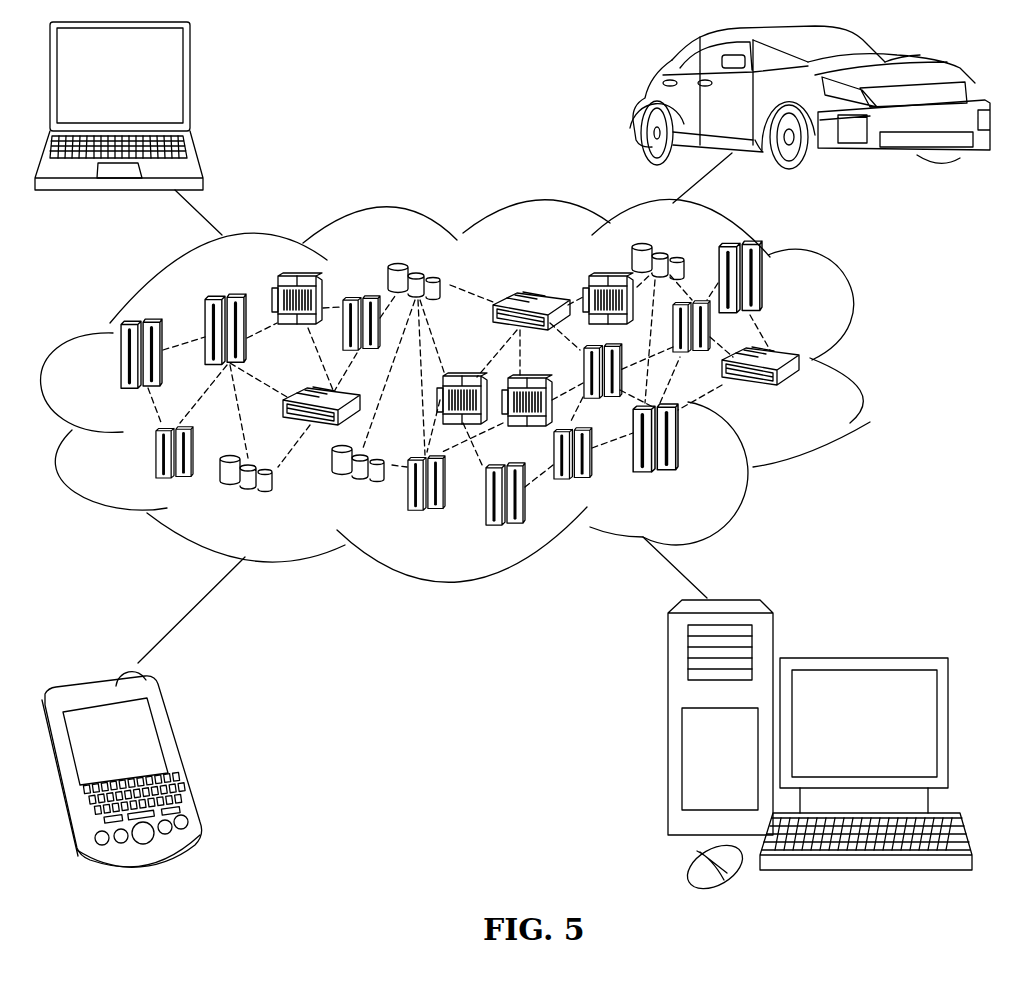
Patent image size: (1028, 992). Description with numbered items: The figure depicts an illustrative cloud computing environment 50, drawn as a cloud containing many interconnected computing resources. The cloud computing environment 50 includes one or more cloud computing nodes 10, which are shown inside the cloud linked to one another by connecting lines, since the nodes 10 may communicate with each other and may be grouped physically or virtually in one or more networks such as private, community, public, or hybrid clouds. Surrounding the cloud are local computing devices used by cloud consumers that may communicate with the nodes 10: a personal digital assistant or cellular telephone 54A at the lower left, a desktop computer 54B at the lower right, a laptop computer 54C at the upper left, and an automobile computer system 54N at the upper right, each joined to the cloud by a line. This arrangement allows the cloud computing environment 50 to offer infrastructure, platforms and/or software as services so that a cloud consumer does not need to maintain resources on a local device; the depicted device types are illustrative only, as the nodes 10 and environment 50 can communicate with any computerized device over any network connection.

The cloud computing node 10 is at (808, 397).
The cloud computing environment 50 is at (863, 363).
The personal digital assistant or cellular telephone 54A is at (180, 753).
The desktop computer 54B is at (862, 657).
The laptop computer 54C is at (190, 83).
The automobile computer system 54N is at (640, 98).